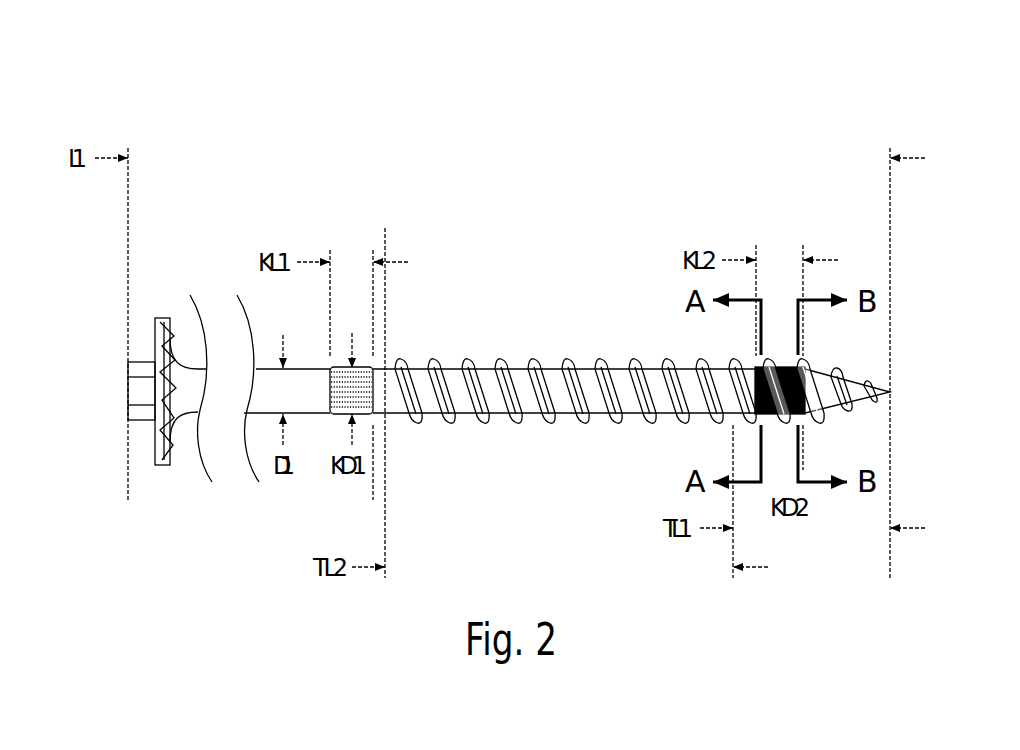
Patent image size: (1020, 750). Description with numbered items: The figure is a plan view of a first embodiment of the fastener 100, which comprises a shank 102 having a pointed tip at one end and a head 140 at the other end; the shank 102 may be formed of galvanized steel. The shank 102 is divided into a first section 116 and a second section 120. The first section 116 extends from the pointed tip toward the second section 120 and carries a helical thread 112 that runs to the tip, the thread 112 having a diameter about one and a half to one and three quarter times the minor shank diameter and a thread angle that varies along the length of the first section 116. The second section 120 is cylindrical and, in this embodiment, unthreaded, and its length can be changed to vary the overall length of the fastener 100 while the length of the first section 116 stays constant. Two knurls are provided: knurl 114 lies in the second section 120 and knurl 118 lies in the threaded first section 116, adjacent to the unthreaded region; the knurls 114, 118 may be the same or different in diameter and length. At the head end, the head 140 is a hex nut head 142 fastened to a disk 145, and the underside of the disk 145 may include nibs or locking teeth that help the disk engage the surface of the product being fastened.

The fastener 100 is at (195, 125).
The shank 102 is at (552, 372).
The helical thread 112 is at (465, 368).
The knurl 114 is at (350, 362).
The first section 116 is at (890, 228).
The knurl 118 is at (795, 364).
The second section 120 is at (373, 498).
The head 140 is at (155, 343).
The hexagonal head 142 is at (140, 414).
The disk 145 is at (172, 335).